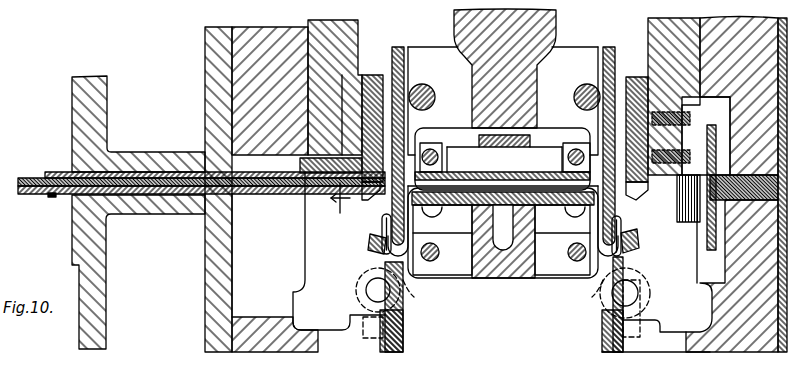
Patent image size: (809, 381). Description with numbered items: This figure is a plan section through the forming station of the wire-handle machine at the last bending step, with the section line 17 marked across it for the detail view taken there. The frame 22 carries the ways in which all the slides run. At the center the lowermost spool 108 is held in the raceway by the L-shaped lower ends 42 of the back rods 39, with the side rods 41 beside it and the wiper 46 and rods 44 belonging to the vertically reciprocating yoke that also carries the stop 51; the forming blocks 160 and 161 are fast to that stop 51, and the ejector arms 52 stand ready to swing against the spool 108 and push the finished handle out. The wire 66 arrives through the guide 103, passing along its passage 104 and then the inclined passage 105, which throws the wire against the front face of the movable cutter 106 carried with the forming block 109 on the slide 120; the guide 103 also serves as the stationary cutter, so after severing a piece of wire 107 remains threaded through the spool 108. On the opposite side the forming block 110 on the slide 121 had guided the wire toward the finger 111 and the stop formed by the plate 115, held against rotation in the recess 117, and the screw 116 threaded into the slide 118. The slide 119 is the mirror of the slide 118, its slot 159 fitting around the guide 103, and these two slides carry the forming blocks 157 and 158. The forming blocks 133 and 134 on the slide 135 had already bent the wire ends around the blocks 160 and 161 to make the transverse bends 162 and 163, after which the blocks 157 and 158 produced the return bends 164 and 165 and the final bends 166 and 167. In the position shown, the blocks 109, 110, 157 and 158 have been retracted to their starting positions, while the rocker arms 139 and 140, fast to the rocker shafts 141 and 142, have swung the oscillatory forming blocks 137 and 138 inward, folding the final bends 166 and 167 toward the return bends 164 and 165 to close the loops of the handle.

The section line 17 is at (339, 142).
The frame 22 is at (205, 263).
The back rods 39 is at (433, 148).
The side rods 41 is at (656, 363).
The lower ends 42 is at (436, 214).
The rods 44 is at (246, 378).
The wiper 46 is at (514, 144).
The stop 51 is at (487, 277).
The ejector arms 52 is at (582, 126).
The wire 66 is at (40, 176).
The guide 103 is at (160, 170).
The passage 104 is at (172, 200).
The passage 105 is at (323, 178).
The movable cutter 106 is at (325, 213).
The piece of wire 107 is at (561, 259).
The spool 108 is at (503, 159).
The forming block 109 is at (372, 76).
The forming block 110 is at (637, 77).
The finger 111 is at (677, 190).
The plate 115 is at (707, 243).
The screw 116 is at (711, 229).
The recess 117 is at (706, 136).
The slide 118 is at (750, 352).
The slide 119 is at (235, 52).
The slide 120 is at (352, 20).
The slide 121 is at (650, 20).
The forming block 133 is at (406, 67).
The forming block 134 is at (603, 72).
The slide 135 is at (553, 34).
The oscillatory forming block 137 is at (368, 248).
The oscillatory forming block 138 is at (636, 250).
The rocker arm 139 is at (414, 294).
The rocker arm 140 is at (592, 294).
The rocker shaft 141 is at (356, 292).
The rocker shaft 142 is at (650, 296).
The forming block 157 is at (404, 338).
The forming block 158 is at (602, 333).
The slot 159 is at (236, 285).
The forming block 160 is at (438, 245).
The forming block 161 is at (562, 240).
The transverse bend 162 is at (433, 259).
The transverse bend 163 is at (578, 262).
The return bend 164 is at (383, 218).
The return bend 165 is at (637, 234).
The final bend 166 is at (368, 240).
The final bend 167 is at (621, 225).